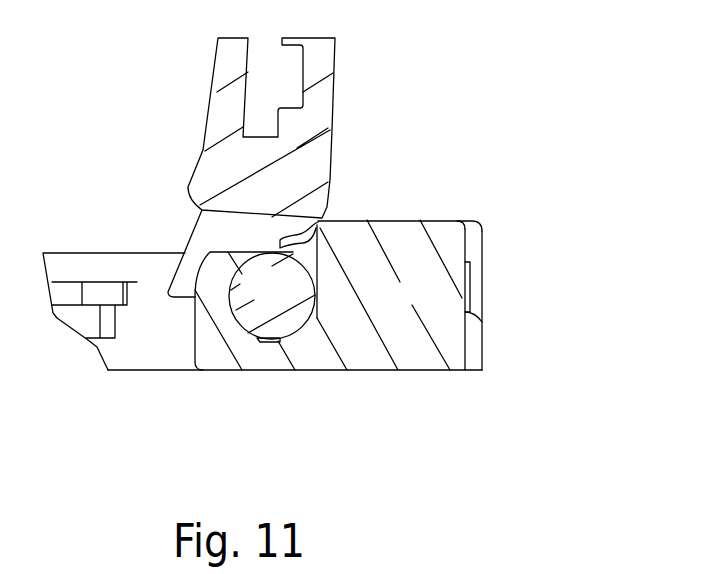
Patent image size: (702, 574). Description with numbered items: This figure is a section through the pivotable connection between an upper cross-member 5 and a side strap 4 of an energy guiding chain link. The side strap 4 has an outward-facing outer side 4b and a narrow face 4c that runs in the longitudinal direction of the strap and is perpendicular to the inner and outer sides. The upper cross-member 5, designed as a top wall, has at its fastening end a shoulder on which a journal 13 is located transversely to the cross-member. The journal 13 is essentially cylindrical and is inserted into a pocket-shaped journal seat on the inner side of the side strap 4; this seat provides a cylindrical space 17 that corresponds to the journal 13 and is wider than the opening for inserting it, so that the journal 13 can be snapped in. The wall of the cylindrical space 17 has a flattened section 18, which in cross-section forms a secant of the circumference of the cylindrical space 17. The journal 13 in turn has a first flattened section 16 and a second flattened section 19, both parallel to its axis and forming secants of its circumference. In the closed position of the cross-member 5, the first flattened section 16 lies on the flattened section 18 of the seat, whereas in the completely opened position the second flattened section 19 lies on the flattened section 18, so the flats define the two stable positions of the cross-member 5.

The upper cross-member 5 is at (213, 70).
The side strap 4 is at (453, 206).
The narrow face 4c is at (365, 221).
The outer side 4b is at (482, 296).
The flattened section 18 is at (313, 293).
The second flattened section 19 is at (309, 288).
The journal 13 is at (218, 338).
The cylindrical space 17 is at (275, 340).
The first flattened section 16 is at (278, 342).